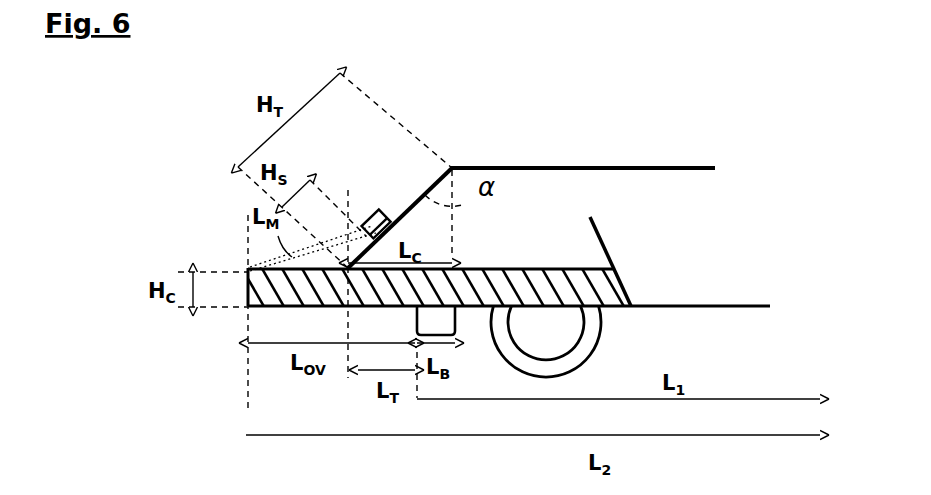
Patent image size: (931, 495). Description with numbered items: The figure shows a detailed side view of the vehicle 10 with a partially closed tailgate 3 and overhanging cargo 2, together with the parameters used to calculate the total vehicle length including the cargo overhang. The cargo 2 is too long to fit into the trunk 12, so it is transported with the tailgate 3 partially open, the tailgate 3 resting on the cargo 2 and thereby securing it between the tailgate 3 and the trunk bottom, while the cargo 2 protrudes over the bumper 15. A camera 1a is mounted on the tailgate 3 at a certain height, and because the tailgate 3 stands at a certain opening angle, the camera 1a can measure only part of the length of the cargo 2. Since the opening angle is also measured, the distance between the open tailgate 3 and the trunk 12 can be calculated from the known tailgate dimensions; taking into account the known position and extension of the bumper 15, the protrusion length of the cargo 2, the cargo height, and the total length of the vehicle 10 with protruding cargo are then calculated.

The vehicle 10 is at (126, 142).
The trunk 12 is at (553, 190).
The cargo 2 is at (575, 268).
The tailgate 3 is at (414, 203).
The camera 1a is at (380, 210).
The bumper 15 is at (456, 338).